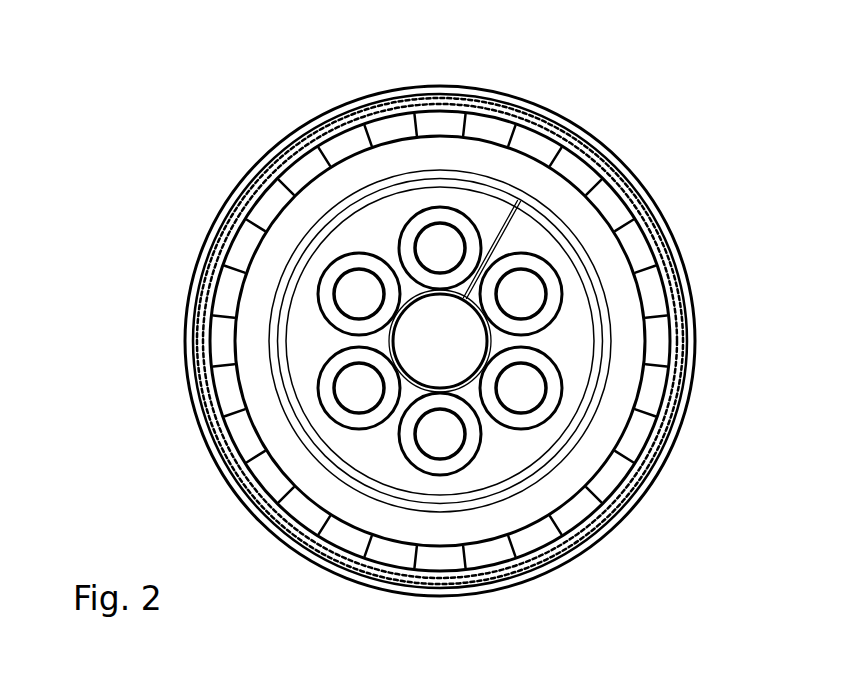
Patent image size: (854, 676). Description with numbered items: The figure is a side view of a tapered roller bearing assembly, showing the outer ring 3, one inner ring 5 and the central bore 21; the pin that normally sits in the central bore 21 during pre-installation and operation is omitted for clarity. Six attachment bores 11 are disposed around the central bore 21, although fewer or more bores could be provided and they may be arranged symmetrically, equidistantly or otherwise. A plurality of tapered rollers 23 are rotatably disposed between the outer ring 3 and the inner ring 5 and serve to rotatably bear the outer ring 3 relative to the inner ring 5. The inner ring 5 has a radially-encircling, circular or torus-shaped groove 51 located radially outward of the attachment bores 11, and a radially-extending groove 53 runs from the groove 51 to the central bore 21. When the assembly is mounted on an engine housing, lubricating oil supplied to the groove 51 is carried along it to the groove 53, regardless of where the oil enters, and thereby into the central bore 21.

The outer ring 3 is at (200, 250).
The inner ring 5 is at (618, 275).
The attachment bores 11 is at (427, 260).
The central bore 21 is at (426, 353).
The tapered rollers 23 is at (535, 140).
The radially-encircling groove 51 is at (277, 390).
The radially-extending groove 53 is at (505, 230).